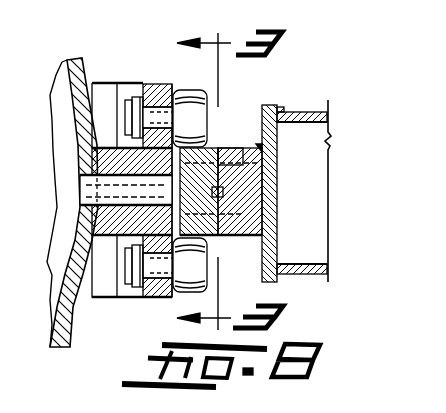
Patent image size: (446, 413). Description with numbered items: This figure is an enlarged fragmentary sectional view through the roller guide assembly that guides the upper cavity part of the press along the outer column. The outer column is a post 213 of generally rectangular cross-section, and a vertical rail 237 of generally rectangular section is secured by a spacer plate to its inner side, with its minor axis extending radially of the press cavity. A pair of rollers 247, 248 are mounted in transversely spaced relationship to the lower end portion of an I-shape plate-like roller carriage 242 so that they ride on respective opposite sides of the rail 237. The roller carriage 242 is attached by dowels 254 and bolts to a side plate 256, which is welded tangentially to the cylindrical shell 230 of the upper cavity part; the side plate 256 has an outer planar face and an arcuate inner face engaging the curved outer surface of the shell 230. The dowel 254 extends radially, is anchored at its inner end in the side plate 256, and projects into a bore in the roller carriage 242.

The post 213 is at (303, 110).
The cylindrical shell 230 is at (86, 60).
The vertical rail 237 is at (225, 148).
The roller carriage 242 is at (160, 83).
The roller 247 is at (190, 292).
The roller 248 is at (208, 104).
The dowel 254 is at (93, 183).
The side plate 256 is at (87, 297).